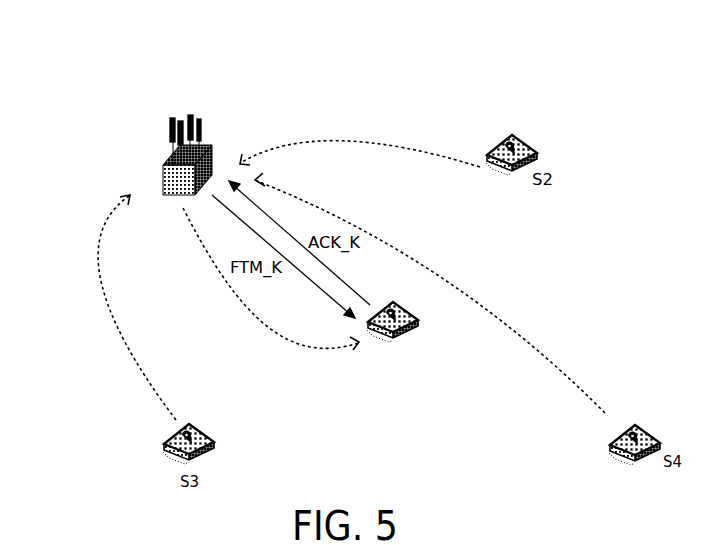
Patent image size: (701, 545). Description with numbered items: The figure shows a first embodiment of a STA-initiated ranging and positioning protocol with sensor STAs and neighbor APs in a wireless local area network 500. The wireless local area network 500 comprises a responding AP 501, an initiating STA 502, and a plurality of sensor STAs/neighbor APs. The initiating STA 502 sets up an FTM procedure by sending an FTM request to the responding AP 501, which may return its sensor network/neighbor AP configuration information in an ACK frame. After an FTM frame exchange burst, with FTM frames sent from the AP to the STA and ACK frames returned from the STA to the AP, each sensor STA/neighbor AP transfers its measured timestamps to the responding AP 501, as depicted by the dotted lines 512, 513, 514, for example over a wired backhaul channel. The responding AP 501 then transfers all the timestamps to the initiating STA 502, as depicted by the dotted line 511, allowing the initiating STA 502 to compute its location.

The wireless local area network 500 is at (695, 111).
The responding AP 501 is at (170, 196).
The initiating STA 502 is at (401, 339).
The dotted line 511 is at (313, 346).
The dotted line 512 is at (387, 146).
The dotted line 513 is at (116, 322).
The dotted line 514 is at (538, 352).